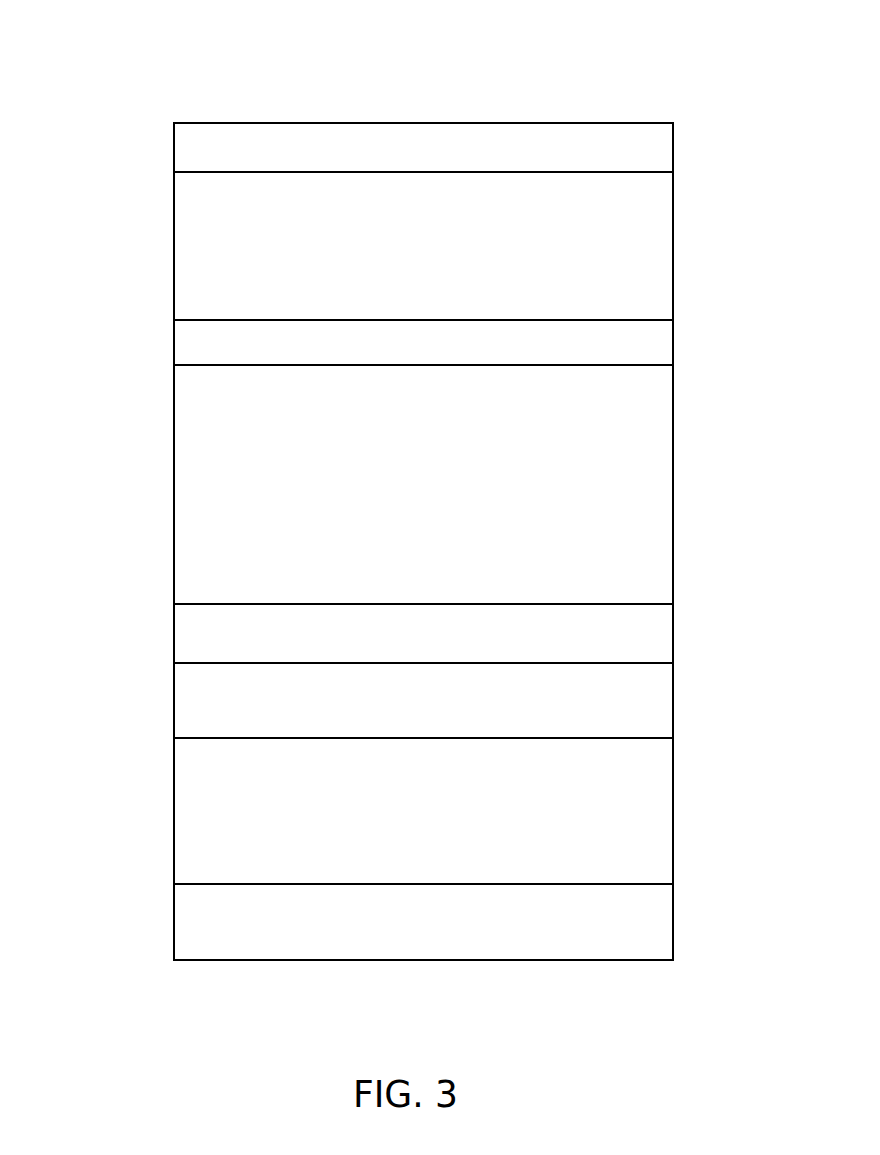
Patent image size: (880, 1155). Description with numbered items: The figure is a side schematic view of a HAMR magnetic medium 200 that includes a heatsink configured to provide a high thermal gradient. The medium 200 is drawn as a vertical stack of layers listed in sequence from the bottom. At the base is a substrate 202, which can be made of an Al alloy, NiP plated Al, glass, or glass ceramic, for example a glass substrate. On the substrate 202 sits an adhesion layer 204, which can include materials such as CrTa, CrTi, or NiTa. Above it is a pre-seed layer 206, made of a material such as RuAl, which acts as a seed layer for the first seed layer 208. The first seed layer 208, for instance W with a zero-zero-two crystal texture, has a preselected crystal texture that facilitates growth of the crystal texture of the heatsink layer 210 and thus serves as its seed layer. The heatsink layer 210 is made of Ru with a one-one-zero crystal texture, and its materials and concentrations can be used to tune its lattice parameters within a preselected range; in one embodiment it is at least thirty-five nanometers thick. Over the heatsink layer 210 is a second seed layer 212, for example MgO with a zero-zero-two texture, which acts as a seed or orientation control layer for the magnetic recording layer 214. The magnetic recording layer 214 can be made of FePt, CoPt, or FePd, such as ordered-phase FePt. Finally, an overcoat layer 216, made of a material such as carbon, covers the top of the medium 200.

The HAMR magnetic medium 200 is at (98, 70).
The substrate 202 is at (673, 920).
The adhesion layer 204 is at (673, 817).
The pre-seed layer 206 is at (673, 699).
The first seed layer 208 is at (673, 631).
The heatsink layer 210 is at (673, 474).
The second seed layer 212 is at (673, 340).
The magnetic recording layer 214 is at (673, 242).
The overcoat layer 216 is at (673, 147).